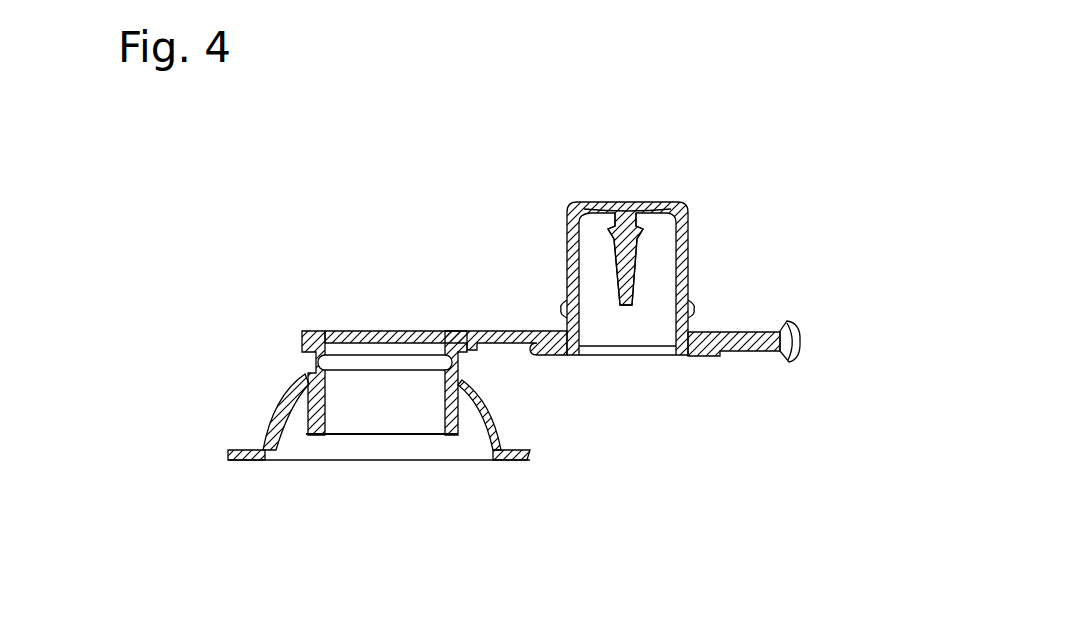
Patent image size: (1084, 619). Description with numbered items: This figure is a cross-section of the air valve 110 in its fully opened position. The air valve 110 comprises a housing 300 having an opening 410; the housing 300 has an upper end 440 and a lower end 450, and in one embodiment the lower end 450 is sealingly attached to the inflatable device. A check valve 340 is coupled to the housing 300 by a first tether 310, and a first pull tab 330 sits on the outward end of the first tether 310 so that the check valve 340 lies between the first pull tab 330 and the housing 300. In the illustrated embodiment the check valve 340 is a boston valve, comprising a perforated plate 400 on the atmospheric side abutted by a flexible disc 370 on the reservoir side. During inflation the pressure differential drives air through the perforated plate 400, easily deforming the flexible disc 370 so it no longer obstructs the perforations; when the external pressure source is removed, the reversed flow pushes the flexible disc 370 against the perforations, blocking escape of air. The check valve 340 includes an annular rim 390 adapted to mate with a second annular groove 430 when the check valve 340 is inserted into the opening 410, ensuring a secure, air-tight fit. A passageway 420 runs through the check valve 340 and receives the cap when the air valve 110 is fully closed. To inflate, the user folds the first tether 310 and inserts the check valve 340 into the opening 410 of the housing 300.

The air valve 110 is at (272, 272).
The housing 300 is at (300, 347).
The first tether 310 is at (512, 340).
The first pull tab 330 is at (840, 336).
The check valve 340 is at (565, 226).
The flexible disc 370 is at (657, 167).
The annular rim 390 is at (688, 311).
The perforated plate 400 is at (717, 196).
The opening 410 is at (352, 423).
The passageway 420 is at (630, 325).
The second annular groove 430 is at (349, 367).
The upper end 440 is at (326, 337).
The lower end 450 is at (446, 436).